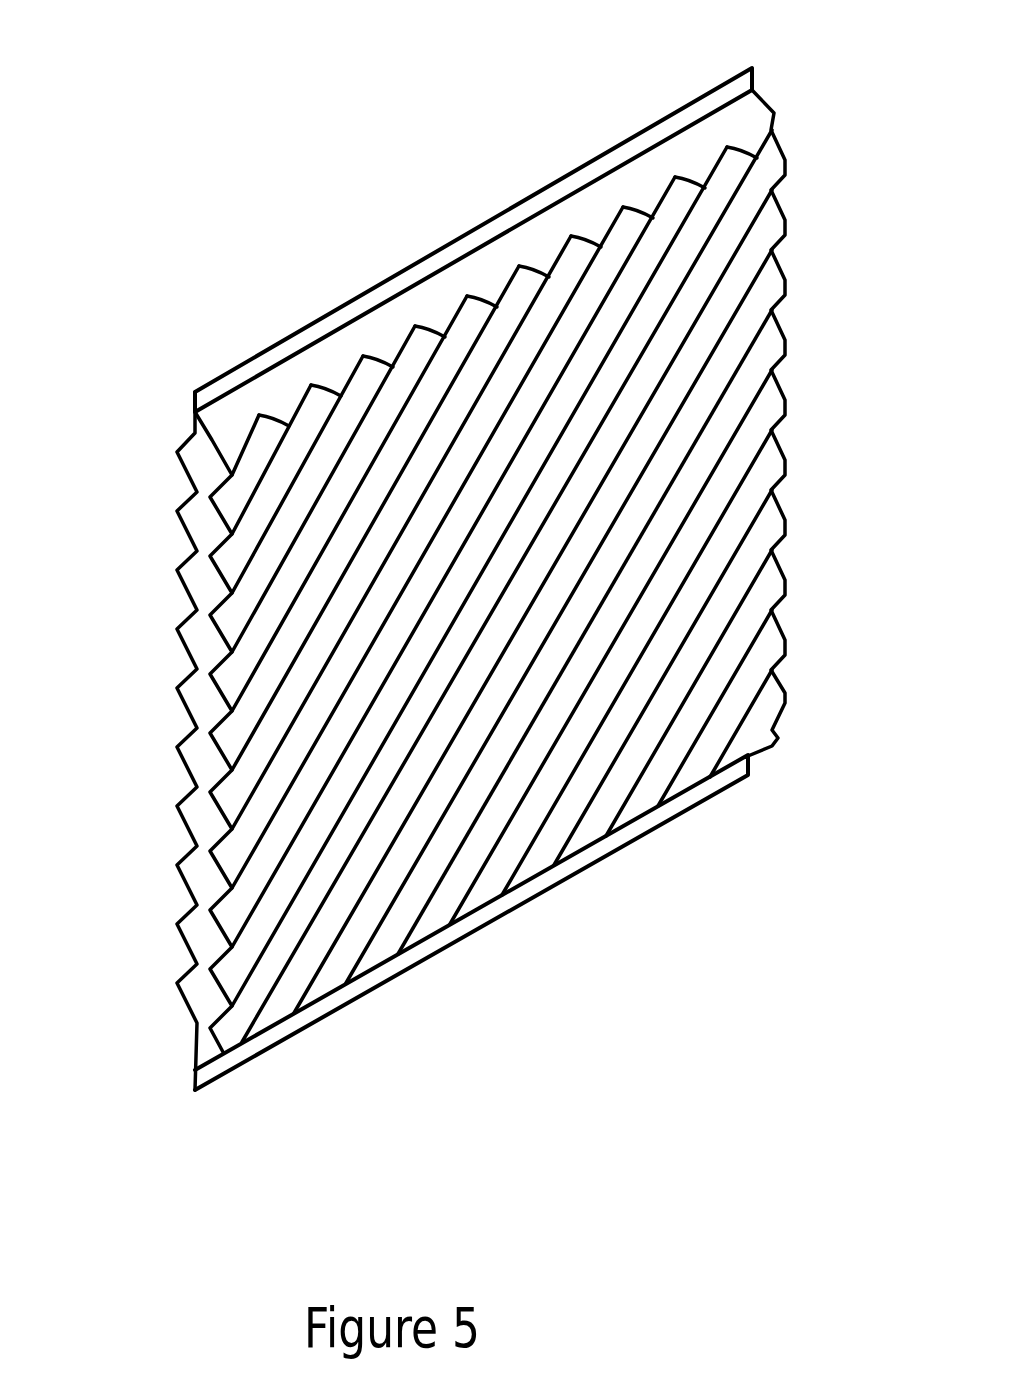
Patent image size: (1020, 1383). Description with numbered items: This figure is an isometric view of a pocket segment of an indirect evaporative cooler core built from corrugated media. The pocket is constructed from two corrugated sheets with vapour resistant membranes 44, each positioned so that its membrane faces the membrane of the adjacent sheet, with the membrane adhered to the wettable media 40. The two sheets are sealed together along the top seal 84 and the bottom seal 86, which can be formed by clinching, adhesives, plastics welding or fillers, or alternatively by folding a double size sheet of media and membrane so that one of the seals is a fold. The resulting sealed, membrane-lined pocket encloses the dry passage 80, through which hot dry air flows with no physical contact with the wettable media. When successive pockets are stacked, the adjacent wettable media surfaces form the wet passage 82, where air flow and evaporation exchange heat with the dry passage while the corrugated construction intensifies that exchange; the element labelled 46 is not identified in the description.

The dry passage 80 is at (413, 564).
The top seal 84 is at (330, 311).
The bottom seal 86 is at (358, 988).
The wet passage 82 is at (573, 644).
The wettable media 40 is at (296, 862).
The corrugated sheet with vapour resistant membrane 44 is at (218, 752).
The troughs 46 is at (204, 817).